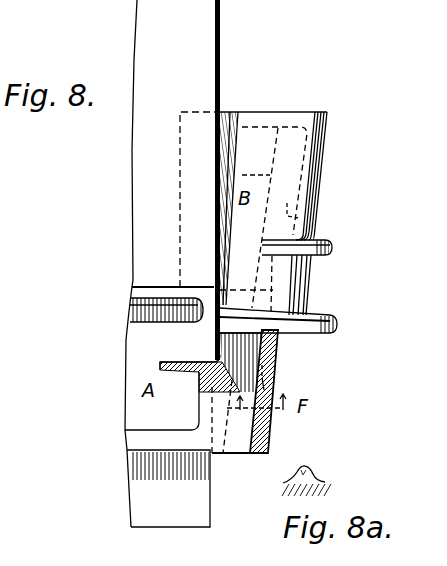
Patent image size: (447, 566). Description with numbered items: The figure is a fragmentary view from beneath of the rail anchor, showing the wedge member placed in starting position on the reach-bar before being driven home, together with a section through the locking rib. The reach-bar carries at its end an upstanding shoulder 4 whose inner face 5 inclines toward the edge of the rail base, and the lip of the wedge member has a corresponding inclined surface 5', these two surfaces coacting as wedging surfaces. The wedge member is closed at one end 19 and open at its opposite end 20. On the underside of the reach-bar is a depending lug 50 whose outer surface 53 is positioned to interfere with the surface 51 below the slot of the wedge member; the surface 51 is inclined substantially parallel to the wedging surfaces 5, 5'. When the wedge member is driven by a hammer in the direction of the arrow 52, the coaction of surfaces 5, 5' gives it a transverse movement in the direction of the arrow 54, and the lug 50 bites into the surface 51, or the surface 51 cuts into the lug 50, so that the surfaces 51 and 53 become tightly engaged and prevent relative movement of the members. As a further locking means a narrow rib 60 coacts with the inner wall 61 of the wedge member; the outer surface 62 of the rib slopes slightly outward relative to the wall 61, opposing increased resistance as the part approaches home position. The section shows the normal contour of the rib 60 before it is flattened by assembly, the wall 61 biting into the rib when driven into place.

In FIG. 8, the upstanding shoulder 4 is at (238, 443).
In FIG. 8, the inner vertical face of shoulder 5 is at (290, 372).
In FIG. 8, the inclined surface of lip 5' is at (297, 172).
In FIG. 8, the closed end of wedge member 19 is at (285, 112).
In FIG. 8, the open end of wedge member 20 is at (308, 311).
In FIG. 8, the depending lug 50 is at (166, 326).
In FIG. 8, the locking surface 51 is at (231, 235).
In FIG. 8, the driving direction arrow 52 is at (262, 88).
In FIG. 8, the outer surface of lug 53 is at (221, 347).
In FIG. 8, the transverse movement arrow 54 is at (270, 99).
In FIG. 8, the narrow rib 60 is at (268, 433).
In FIG. 8A, the narrow rib 60 is at (304, 470).
In FIG. 8, the inner wall of wedge member 61 is at (300, 198).
In FIG. 8, the outer surface of rib 62 is at (266, 382).